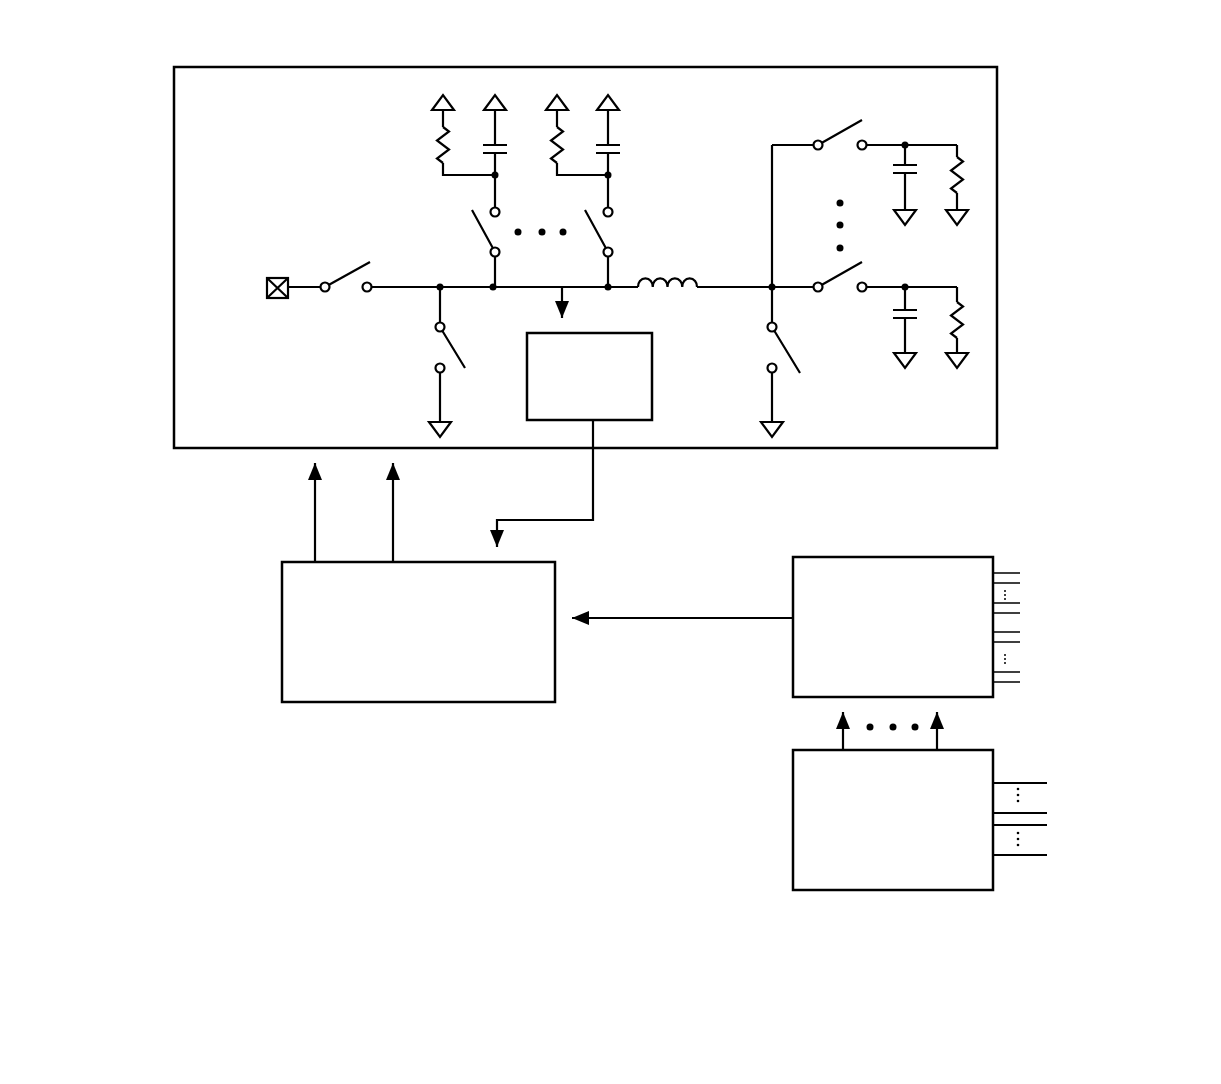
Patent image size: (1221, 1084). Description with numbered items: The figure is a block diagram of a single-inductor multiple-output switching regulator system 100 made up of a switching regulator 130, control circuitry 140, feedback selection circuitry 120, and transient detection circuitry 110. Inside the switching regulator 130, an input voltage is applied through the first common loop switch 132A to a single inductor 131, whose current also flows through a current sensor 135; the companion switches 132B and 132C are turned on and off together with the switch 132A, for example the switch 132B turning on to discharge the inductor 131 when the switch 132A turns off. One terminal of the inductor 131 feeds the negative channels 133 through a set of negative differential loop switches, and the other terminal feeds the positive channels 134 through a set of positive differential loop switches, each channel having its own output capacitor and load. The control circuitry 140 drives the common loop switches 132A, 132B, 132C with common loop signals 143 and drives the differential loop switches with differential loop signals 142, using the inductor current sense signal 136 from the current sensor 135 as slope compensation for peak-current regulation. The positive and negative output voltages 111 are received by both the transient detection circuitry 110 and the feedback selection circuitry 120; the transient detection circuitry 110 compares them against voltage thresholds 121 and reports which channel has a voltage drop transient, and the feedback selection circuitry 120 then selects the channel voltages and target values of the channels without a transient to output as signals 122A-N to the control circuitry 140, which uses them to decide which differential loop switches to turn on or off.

The SIMO switching regulator system 100 is at (1115, 65).
The transient detection circuitry 110 is at (986, 746).
The positive and negative output voltages 111 is at (1056, 557).
The feedback selection circuitry 120 is at (989, 554).
The voltage thresholds 121 is at (1081, 576).
The signals 122A-N is at (646, 612).
The switching regulator 130 is at (986, 62).
The inductor 131 is at (666, 276).
The switch S1 132A is at (333, 272).
The switch S2 132B is at (453, 331).
The switch S3 132C is at (804, 373).
The negative channels 133 is at (509, 215).
The positive channels 134 is at (849, 111).
The current sensor 135 is at (646, 331).
The IL_sense signal 136 is at (517, 513).
The control circuitry 140 is at (549, 556).
The differential loop signals 142 is at (322, 508).
The common loop signals 143 is at (397, 537).